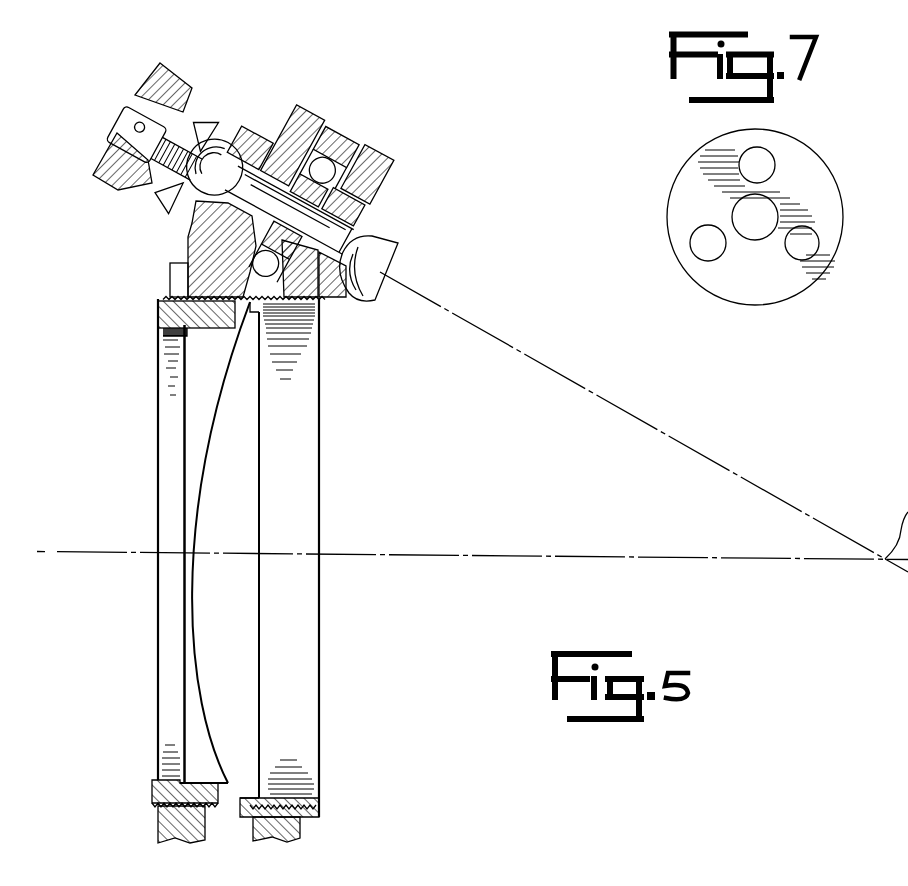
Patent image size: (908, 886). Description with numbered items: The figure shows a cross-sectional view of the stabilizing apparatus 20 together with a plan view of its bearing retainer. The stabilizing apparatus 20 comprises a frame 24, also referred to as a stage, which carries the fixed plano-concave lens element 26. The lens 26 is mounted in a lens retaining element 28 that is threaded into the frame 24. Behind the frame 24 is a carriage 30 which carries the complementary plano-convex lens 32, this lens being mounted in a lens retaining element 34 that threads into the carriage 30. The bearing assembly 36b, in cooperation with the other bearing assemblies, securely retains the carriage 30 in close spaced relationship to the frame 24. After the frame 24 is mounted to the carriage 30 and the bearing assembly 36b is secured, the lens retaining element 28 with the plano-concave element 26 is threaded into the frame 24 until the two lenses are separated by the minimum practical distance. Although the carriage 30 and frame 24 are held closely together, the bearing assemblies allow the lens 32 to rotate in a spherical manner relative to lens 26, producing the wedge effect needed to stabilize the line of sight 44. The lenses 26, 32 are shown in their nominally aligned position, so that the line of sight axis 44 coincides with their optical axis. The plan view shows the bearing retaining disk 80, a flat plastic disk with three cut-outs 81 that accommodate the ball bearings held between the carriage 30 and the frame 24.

In FIG. 5, the stabilizing apparatus 20 is at (489, 286).
In FIG. 5, the frame 24 is at (187, 257).
In FIG. 5, the plano-concave lens element 26 is at (203, 360).
In FIG. 5, the lens retaining element 28 is at (156, 400).
In FIG. 5, the carriage 30 is at (328, 299).
In FIG. 5, the plano-convex lens 32 is at (243, 412).
In FIG. 5, the lens retaining element 34 is at (308, 376).
In FIG. 5, the bearing assembly 36b is at (290, 98).
In FIG. 5, the line of sight axis 44 is at (535, 555).
In FIG. 7, the bearing retaining disk 80 is at (823, 182).
In FIG. 7, the cut-outs 81 is at (718, 250).